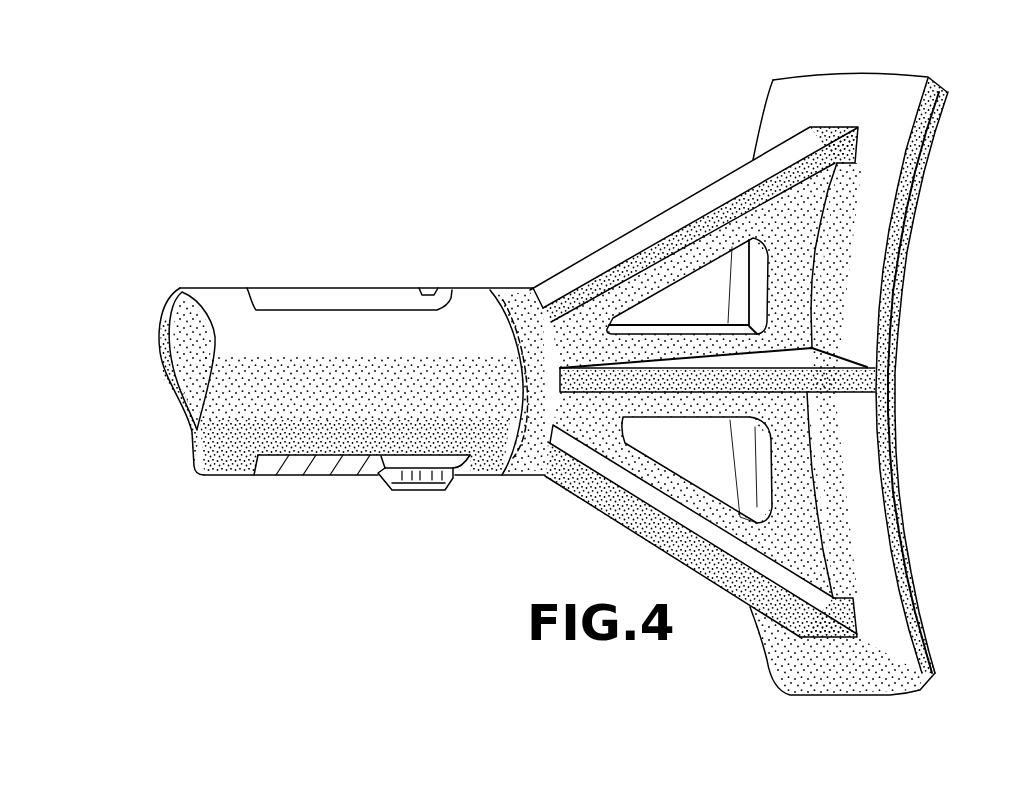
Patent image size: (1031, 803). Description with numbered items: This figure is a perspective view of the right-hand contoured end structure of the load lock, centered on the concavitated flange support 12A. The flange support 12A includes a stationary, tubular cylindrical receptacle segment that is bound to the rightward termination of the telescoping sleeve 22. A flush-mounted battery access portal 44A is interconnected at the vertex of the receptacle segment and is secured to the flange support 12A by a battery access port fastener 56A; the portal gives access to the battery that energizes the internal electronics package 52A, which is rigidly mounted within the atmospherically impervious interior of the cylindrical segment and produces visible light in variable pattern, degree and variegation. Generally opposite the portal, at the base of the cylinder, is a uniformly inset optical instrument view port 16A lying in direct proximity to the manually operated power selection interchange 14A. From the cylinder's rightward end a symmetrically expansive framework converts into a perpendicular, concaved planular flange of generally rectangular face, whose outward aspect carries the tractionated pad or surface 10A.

The tractionated pad or surface 10A is at (900, 507).
The concavitated flange support 12A is at (727, 182).
The power selection interchange 14A is at (419, 492).
The optical instrument view port 16A is at (275, 467).
The telescoping sleeve 22 is at (232, 300).
The battery access portal 44A is at (348, 290).
The internal electronics package 52A is at (188, 372).
The battery access port fastener 56A is at (430, 290).